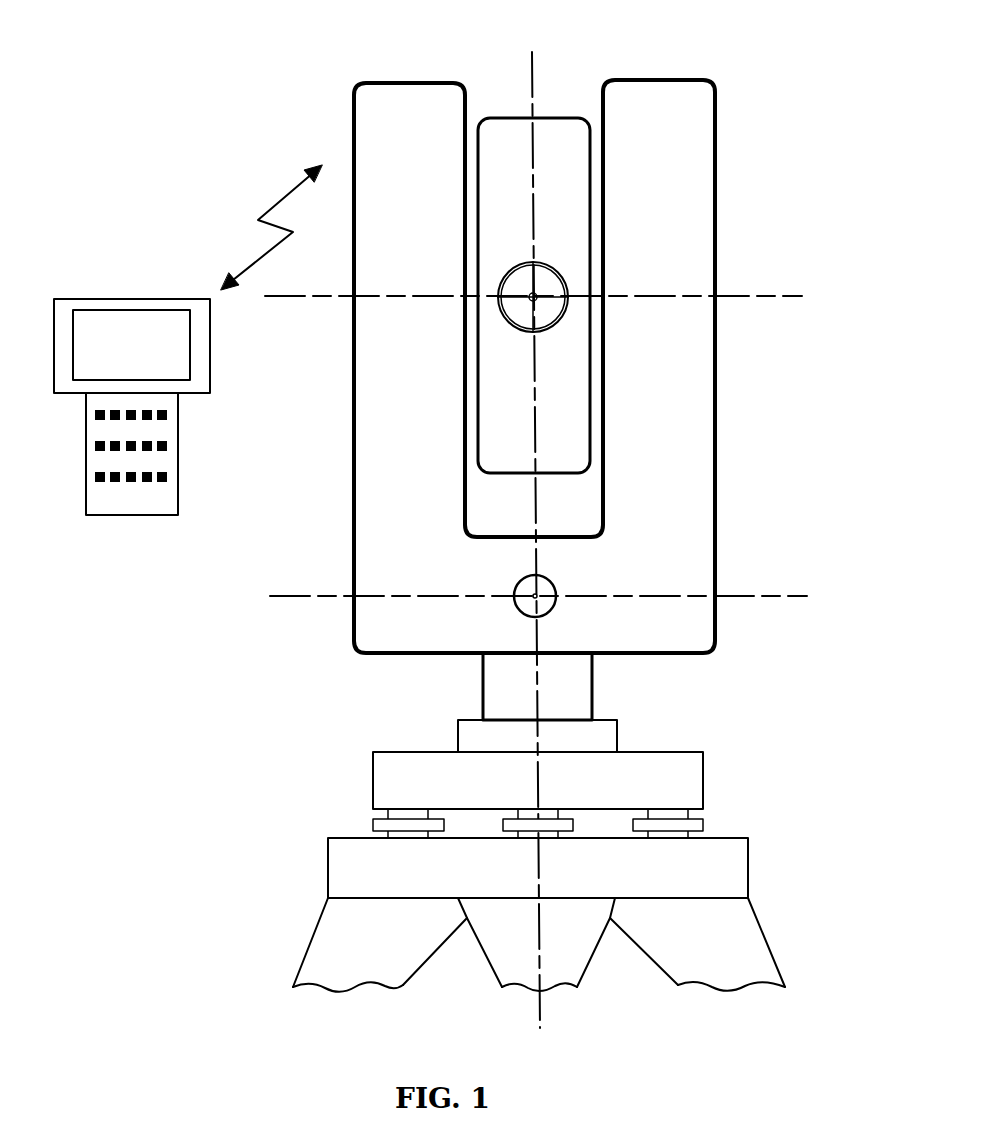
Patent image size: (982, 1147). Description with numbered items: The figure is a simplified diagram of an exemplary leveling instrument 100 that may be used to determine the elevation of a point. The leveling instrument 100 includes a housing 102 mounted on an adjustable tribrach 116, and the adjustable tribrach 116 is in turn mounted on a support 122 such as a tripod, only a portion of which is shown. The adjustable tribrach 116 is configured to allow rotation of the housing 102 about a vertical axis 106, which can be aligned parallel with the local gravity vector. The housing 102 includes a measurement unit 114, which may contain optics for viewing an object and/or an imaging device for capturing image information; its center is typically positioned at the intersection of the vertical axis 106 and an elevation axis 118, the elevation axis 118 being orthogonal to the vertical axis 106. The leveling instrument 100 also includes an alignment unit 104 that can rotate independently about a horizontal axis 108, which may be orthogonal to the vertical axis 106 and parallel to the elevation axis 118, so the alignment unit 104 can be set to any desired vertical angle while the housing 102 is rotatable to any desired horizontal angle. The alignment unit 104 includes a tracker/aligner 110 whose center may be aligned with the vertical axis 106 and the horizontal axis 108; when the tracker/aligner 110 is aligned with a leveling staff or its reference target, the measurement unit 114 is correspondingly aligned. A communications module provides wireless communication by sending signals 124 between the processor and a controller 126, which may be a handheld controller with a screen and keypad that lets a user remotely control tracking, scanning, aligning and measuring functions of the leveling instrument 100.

The leveling instrument 100 is at (322, 67).
The housing 102 is at (715, 452).
The alignment unit 104 is at (515, 118).
The vertical axis 106 is at (532, 60).
The horizontal axis 108 is at (750, 296).
The tracker/aligner 110 is at (538, 262).
The measurement unit 114 is at (514, 585).
The adjustable tribrach 116 is at (703, 762).
The elevation axis 118 is at (752, 596).
The support 122 is at (748, 848).
The signals 124 is at (288, 192).
The controller 126 is at (178, 497).